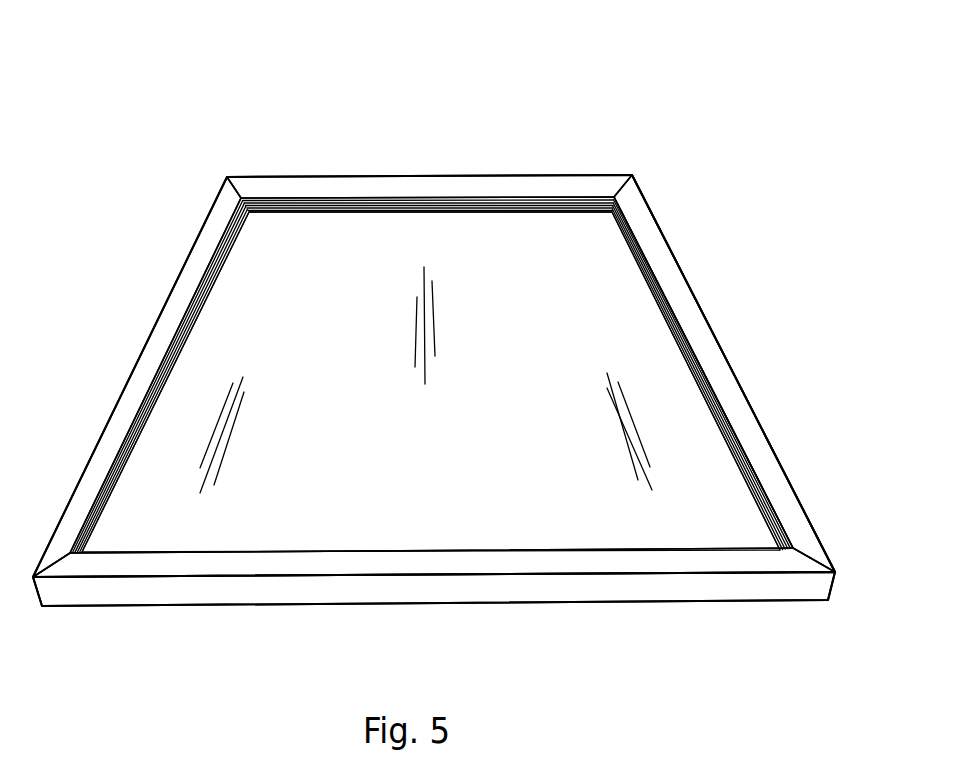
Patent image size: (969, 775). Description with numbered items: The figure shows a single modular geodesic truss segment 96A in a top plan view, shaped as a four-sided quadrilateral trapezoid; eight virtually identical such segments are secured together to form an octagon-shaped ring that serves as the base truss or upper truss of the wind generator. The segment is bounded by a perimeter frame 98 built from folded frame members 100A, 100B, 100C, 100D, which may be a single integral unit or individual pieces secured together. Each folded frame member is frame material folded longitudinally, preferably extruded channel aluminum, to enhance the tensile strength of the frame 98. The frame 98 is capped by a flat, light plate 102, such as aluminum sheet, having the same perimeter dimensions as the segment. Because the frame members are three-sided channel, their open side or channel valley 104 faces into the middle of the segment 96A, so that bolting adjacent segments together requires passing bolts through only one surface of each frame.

The geodesic truss segment 96A is at (609, 95).
The perimeter frame 98 is at (683, 300).
The folded frame member 100A is at (767, 475).
The folded frame member 100B is at (398, 593).
The folded frame member 100C is at (143, 368).
The folded frame member 100D is at (425, 187).
The plate 102 is at (262, 297).
The channel valley 104 is at (632, 252).